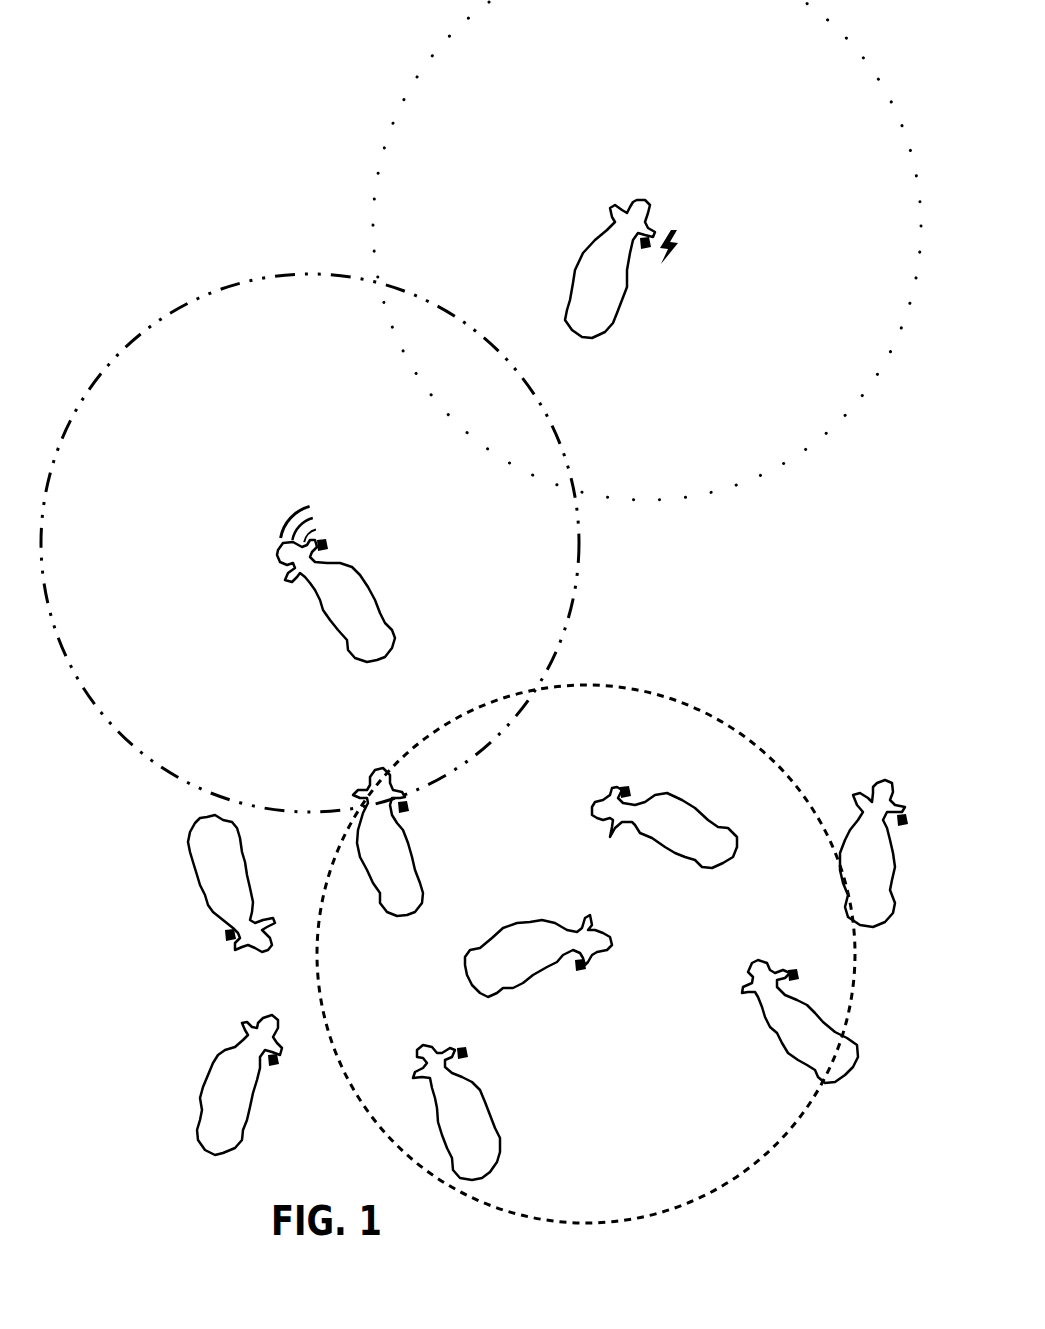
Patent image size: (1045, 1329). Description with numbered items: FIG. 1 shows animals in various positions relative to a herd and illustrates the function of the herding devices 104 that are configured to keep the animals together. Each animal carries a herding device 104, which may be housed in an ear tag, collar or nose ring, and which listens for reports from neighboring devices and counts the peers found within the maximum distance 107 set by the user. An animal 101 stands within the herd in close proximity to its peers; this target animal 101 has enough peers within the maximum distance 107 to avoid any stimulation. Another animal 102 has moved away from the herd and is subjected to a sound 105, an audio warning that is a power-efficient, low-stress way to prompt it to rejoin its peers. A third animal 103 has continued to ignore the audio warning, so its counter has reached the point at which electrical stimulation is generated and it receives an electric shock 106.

The animal within a herd 101 is at (463, 967).
The animal moved away from the herd 102 is at (363, 580).
The animal receiving electric shock 103 is at (626, 278).
The herding device 104 is at (652, 232).
The sound 105 is at (283, 499).
The electric shock 106 is at (681, 246).
The maximum distance 107 is at (578, 578).